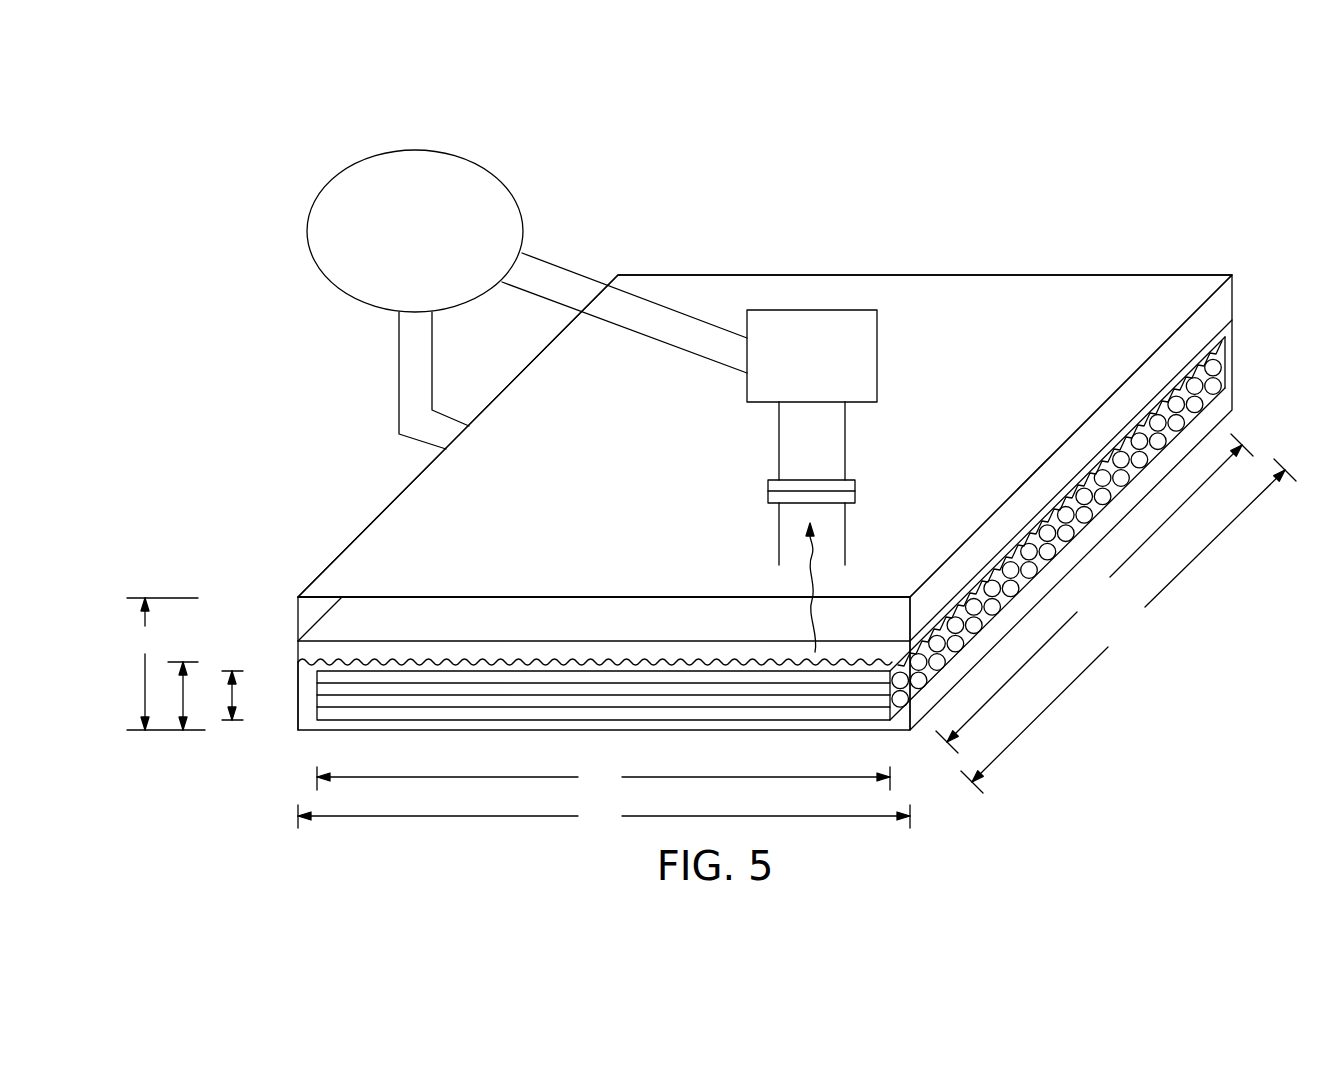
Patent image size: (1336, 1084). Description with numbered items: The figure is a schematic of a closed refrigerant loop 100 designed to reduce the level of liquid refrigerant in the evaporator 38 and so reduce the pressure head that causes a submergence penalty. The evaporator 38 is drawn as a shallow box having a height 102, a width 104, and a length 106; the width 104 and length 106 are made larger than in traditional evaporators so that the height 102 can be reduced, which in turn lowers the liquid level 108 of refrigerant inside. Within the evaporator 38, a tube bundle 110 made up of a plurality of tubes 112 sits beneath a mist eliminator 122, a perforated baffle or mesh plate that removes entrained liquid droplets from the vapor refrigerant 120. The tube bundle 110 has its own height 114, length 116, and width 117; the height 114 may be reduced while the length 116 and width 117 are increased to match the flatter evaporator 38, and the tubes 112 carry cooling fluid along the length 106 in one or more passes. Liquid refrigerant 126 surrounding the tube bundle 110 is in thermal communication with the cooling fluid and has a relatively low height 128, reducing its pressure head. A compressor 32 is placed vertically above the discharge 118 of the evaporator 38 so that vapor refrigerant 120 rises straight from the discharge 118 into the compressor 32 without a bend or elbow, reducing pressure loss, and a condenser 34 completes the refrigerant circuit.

The closed refrigerant loop 100 is at (970, 235).
The evaporator 38 is at (986, 388).
The condenser 34 is at (517, 204).
The compressor 32 is at (878, 352).
The discharge 118 is at (843, 540).
The vapor refrigerant 120 is at (810, 552).
The liquid level 108 is at (325, 660).
The mist eliminator 122 is at (368, 619).
The tube bundle 110 is at (317, 705).
The tubes 112 is at (990, 604).
The refrigerant 126 is at (300, 689).
The height 102 is at (165, 664).
The height 128 is at (190, 700).
The height 114 is at (236, 697).
The length 116 is at (603, 777).
The length 106 is at (604, 816).
The width 117 is at (1094, 593).
The width 104 is at (1128, 626).